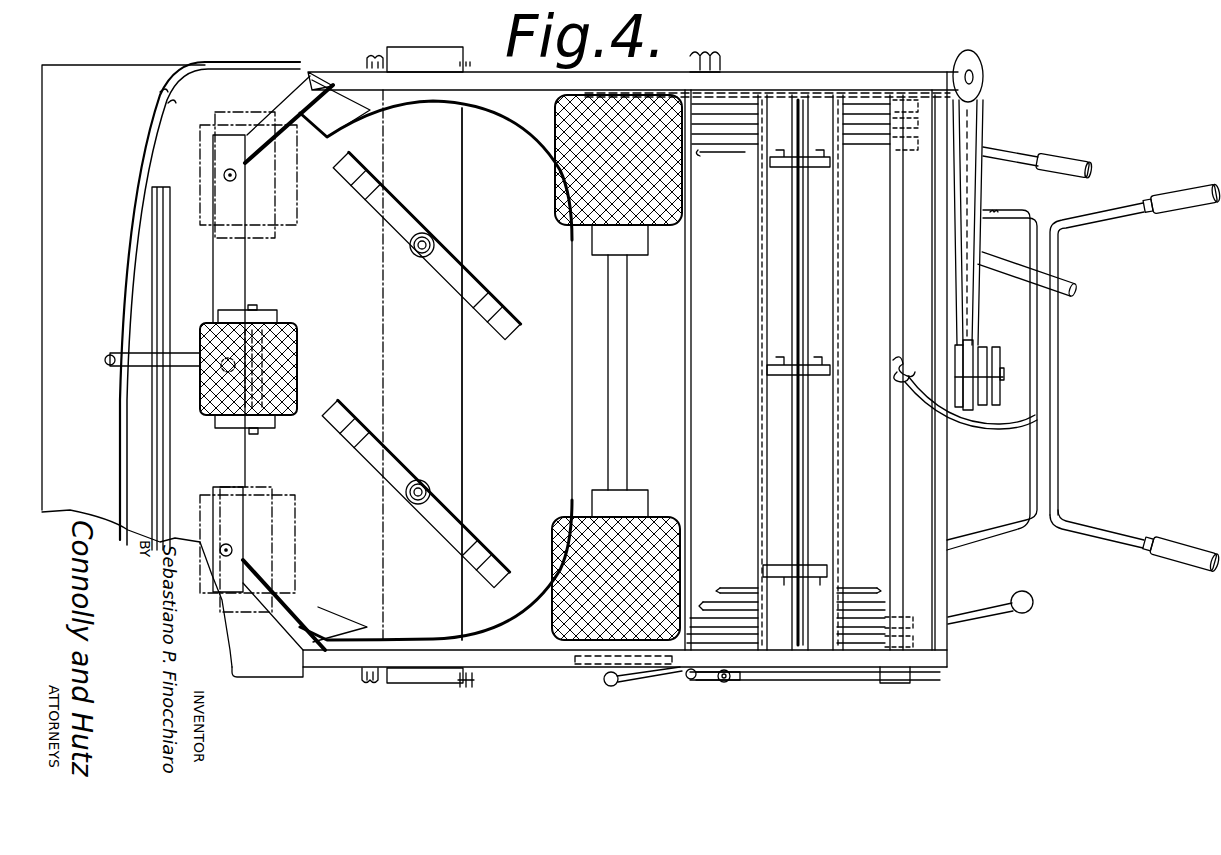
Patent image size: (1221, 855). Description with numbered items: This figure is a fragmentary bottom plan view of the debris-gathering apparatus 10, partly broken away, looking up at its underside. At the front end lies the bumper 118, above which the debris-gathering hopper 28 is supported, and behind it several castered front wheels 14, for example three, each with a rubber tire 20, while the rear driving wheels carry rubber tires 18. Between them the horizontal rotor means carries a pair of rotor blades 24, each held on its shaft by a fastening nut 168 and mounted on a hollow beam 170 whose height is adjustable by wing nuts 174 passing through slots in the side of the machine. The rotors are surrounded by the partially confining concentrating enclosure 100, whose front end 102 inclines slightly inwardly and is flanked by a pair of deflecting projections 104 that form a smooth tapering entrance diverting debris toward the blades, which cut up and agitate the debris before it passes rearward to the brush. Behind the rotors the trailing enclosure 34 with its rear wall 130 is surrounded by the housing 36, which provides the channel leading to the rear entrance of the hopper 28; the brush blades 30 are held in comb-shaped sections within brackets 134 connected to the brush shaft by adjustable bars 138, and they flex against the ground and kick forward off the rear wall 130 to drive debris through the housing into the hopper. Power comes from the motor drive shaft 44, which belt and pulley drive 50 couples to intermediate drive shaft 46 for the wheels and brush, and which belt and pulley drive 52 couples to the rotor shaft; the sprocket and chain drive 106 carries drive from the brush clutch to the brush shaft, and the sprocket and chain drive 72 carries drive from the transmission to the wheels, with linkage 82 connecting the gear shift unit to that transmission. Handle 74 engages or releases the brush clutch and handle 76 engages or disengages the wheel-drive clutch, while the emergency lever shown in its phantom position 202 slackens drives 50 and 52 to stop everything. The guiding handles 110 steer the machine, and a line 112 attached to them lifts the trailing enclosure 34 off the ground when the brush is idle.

The debris-gathering apparatus 10 is at (536, 679).
The front wheel 14 is at (278, 238).
The rubber tire 18 is at (660, 222).
The rubber tire 20 is at (312, 375).
The rotor blade 24 is at (510, 310).
The debris-gathering hopper 28 is at (112, 85).
The blades 30 is at (705, 152).
The trailing enclosure 34 is at (920, 494).
The housing 36 is at (712, 328).
The motor drive shaft 44 is at (940, 400).
The intermediate drive shaft 46 is at (868, 70).
The belt and pulley drive 50 is at (975, 305).
The belt and pulley drive 52 is at (975, 332).
The sprocket and chain drive 72 is at (645, 672).
The handle 74 is at (1068, 160).
The handle 76 is at (985, 620).
The linkage 82 is at (840, 678).
The concentrating enclosure 100 is at (545, 392).
The front end 102 is at (340, 125).
The deflecting projection 104 is at (290, 105).
The sprocket and chain drive 106 is at (762, 88).
The guiding handle 110 is at (1183, 207).
The line 112 is at (1014, 430).
The bumper 118 is at (117, 332).
The rear wall 130 is at (920, 581).
The bracket 134 is at (762, 283).
The bar 138 is at (780, 175).
The fastening nut 168 is at (434, 238).
The hollow beam 170 is at (392, 343).
The wing nut 174 is at (367, 58).
The phantom position of lever 202 is at (1075, 289).